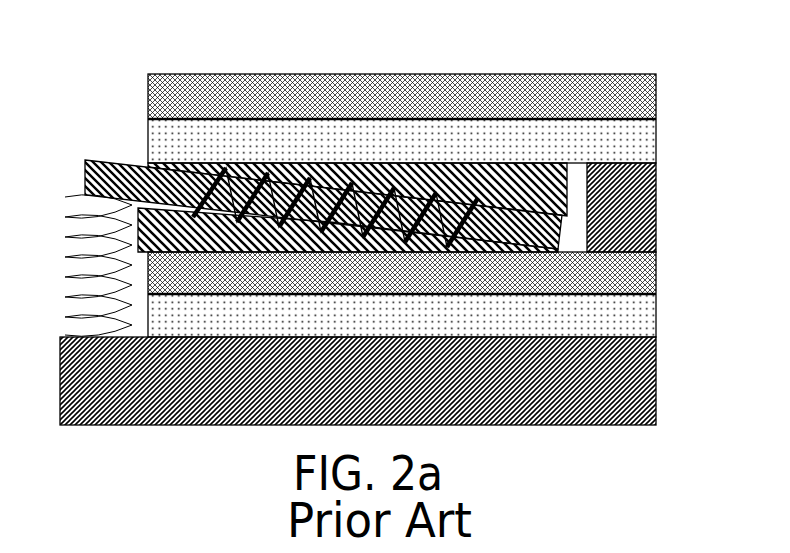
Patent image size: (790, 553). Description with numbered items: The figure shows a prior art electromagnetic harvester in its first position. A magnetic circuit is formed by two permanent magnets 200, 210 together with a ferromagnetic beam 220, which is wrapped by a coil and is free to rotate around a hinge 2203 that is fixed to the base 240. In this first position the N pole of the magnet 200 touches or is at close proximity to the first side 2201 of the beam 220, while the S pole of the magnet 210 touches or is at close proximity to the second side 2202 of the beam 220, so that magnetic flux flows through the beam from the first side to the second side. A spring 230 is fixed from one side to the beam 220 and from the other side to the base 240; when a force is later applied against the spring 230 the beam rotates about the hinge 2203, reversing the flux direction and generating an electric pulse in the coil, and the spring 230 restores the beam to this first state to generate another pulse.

The permanent magnet 200 is at (228, 102).
The permanent magnet 210 is at (647, 310).
The ferromagnetic beam 220 is at (143, 158).
The first side of beam 2201 is at (78, 160).
The second side of beam 2202 is at (565, 237).
The hinge 2203 is at (347, 190).
The spring 230 is at (87, 283).
The base 240 is at (645, 408).